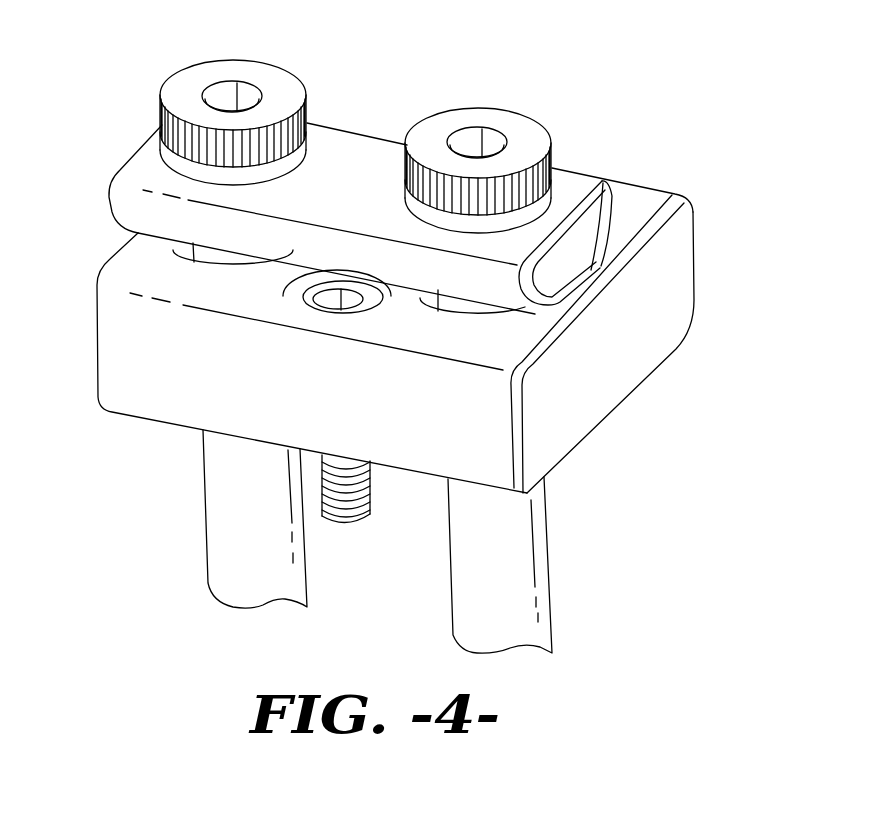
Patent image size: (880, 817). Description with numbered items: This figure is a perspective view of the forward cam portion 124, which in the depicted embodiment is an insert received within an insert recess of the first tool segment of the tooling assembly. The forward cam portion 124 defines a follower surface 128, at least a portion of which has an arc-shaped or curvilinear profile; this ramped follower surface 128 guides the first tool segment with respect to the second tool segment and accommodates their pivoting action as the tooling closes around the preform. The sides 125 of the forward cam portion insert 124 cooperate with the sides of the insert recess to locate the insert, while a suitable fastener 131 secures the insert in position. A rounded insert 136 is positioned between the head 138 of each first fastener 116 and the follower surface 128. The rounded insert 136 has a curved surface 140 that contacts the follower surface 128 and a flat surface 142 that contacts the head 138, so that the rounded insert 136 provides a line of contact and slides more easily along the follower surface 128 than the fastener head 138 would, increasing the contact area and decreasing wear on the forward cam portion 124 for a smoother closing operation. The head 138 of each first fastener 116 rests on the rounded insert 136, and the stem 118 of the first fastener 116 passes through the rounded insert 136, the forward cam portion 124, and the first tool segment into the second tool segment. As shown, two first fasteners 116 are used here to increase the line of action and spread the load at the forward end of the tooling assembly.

The first fastener 116 is at (221, 53).
The stem 118 is at (227, 532).
The forward cam portion 124 is at (132, 266).
The sides 125 is at (160, 375).
The follower surface 128 is at (633, 189).
The fastener 131 is at (300, 298).
The rounded insert 136 is at (145, 166).
The head 138 is at (263, 75).
The curved surface 140 is at (497, 278).
The flat surface 142 is at (339, 157).